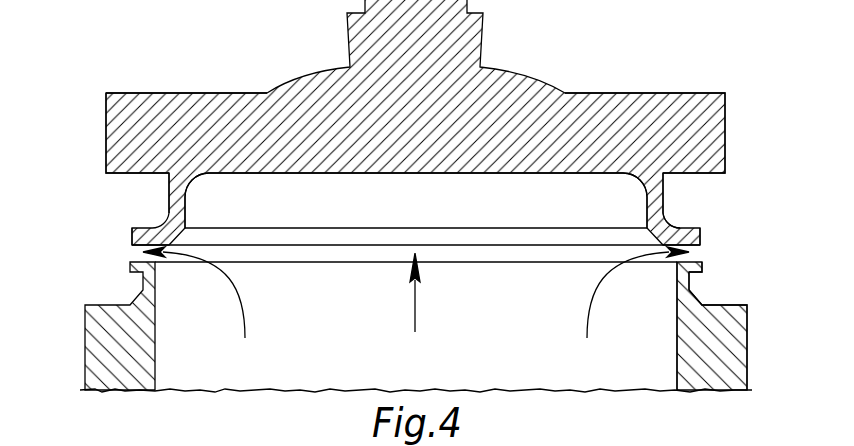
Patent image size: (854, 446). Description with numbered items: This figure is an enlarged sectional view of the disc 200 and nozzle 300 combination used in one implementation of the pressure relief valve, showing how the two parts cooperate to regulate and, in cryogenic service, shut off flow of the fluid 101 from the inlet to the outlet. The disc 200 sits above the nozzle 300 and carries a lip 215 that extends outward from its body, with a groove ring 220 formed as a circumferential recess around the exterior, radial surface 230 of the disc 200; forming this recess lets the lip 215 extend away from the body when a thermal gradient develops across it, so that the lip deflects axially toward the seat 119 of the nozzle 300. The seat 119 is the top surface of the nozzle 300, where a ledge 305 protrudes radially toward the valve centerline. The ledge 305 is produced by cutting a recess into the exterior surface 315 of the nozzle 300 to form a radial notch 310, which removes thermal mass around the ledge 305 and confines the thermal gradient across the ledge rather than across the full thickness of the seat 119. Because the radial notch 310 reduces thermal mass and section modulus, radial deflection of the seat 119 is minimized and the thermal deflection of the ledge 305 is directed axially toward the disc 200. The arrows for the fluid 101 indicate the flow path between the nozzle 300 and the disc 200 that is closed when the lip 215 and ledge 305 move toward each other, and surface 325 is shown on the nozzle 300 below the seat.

The disc 200 is at (524, 64).
The exterior, radial surface 230 is at (725, 138).
The groove ring 220 is at (663, 192).
The lip 215 is at (702, 238).
The seat 119 is at (140, 251).
The fluid 101 is at (245, 318).
The nozzle 300 is at (805, 262).
The ledge 305 is at (700, 268).
The radial notch 310 is at (690, 283).
The exterior surface 315 is at (705, 300).
The inner surface 325 is at (676, 350).